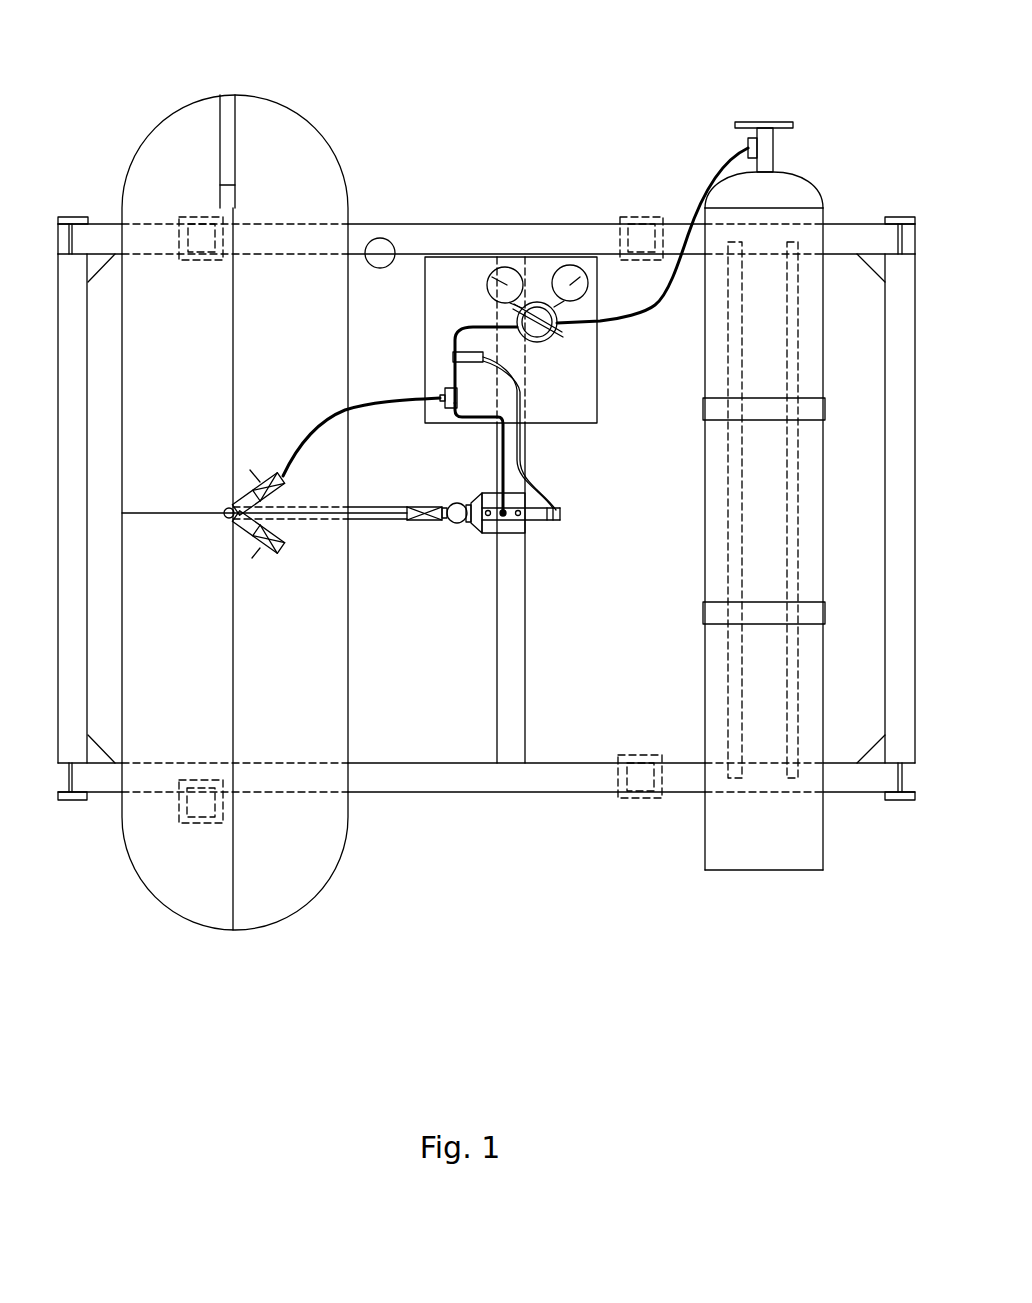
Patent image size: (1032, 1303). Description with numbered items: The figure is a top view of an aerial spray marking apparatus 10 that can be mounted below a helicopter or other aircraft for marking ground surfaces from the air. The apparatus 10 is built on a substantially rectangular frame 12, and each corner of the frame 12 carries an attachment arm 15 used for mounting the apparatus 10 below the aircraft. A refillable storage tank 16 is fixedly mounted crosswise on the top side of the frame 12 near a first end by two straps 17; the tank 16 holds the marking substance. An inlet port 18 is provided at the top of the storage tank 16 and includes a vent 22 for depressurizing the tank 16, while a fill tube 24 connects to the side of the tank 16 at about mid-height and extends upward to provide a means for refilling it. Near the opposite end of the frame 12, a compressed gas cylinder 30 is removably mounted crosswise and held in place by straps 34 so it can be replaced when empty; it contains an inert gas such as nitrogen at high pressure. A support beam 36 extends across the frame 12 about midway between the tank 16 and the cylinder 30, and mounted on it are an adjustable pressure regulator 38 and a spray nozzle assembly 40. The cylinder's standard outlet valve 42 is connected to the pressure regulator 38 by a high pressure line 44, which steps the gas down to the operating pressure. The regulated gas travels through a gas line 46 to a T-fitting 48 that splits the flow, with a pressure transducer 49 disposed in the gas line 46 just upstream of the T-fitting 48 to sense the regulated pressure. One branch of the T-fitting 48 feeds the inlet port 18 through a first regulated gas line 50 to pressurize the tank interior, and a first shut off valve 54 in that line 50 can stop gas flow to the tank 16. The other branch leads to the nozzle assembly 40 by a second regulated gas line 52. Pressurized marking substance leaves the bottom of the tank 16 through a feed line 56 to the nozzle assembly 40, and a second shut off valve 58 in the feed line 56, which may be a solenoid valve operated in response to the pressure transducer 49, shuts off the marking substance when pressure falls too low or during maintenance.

The aerial spray marking apparatus 10 is at (486, 640).
The frame 12 is at (486, 153).
The attachment arm 15 is at (486, 501).
The storage tank 16 is at (262, 557).
The straps 17 is at (421, 488).
The inlet port 18 is at (178, 453).
The vent 22 is at (229, 583).
The fill tube 24 is at (443, 146).
The compressed gas cylinder 30 is at (812, 444).
The straps 34 is at (709, 511).
The support beam 36 is at (555, 510).
The pressure regulator 38 is at (550, 340).
The spray nozzle assembly 40 is at (485, 613).
The outlet valve 42 is at (722, 114).
The high pressure line 44 is at (652, 218).
The gas line 46 is at (458, 285).
The T-fitting 48 is at (423, 364).
The pressure transducer 49 is at (573, 433).
The first regulated gas line 50 is at (357, 405).
The second regulated gas line 52 is at (443, 459).
The first shut off valve 54 is at (237, 432).
The feed line 56 is at (413, 555).
The second shut off valve 58 is at (327, 584).